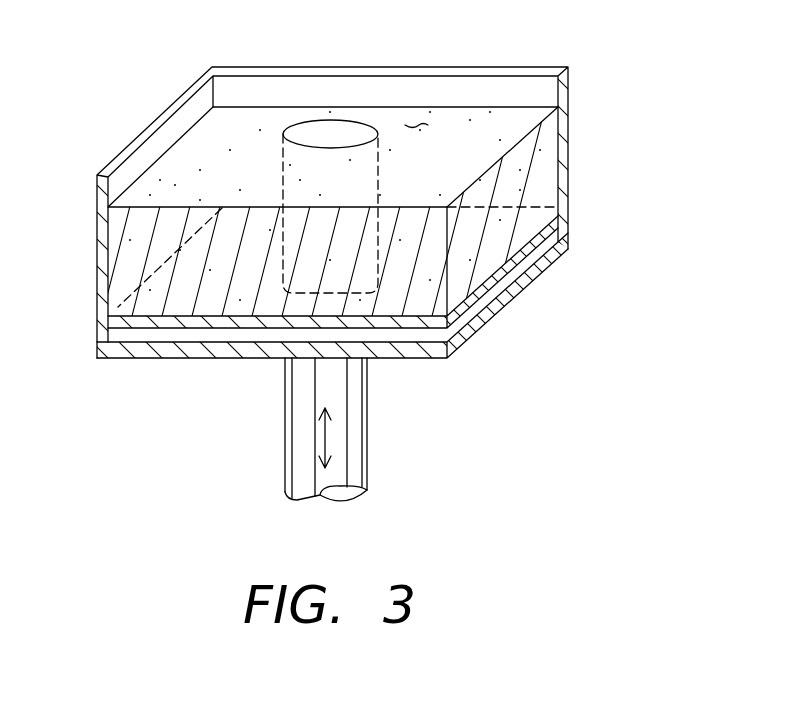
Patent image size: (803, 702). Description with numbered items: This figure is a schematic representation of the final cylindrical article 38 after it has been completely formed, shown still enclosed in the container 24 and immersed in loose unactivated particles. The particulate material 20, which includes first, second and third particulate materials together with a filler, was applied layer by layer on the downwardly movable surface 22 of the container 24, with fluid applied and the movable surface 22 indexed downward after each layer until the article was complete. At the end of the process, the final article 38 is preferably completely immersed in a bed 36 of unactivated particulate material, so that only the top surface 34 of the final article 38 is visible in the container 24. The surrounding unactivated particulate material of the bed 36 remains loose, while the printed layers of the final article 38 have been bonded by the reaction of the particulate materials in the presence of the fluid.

The particulate material 20 is at (420, 118).
The downwardly movable surface 22 is at (550, 257).
The container 24 is at (570, 142).
The top surface 34 is at (302, 126).
The bed of unactivated particulate material 36 is at (533, 195).
The final article 38 is at (283, 162).